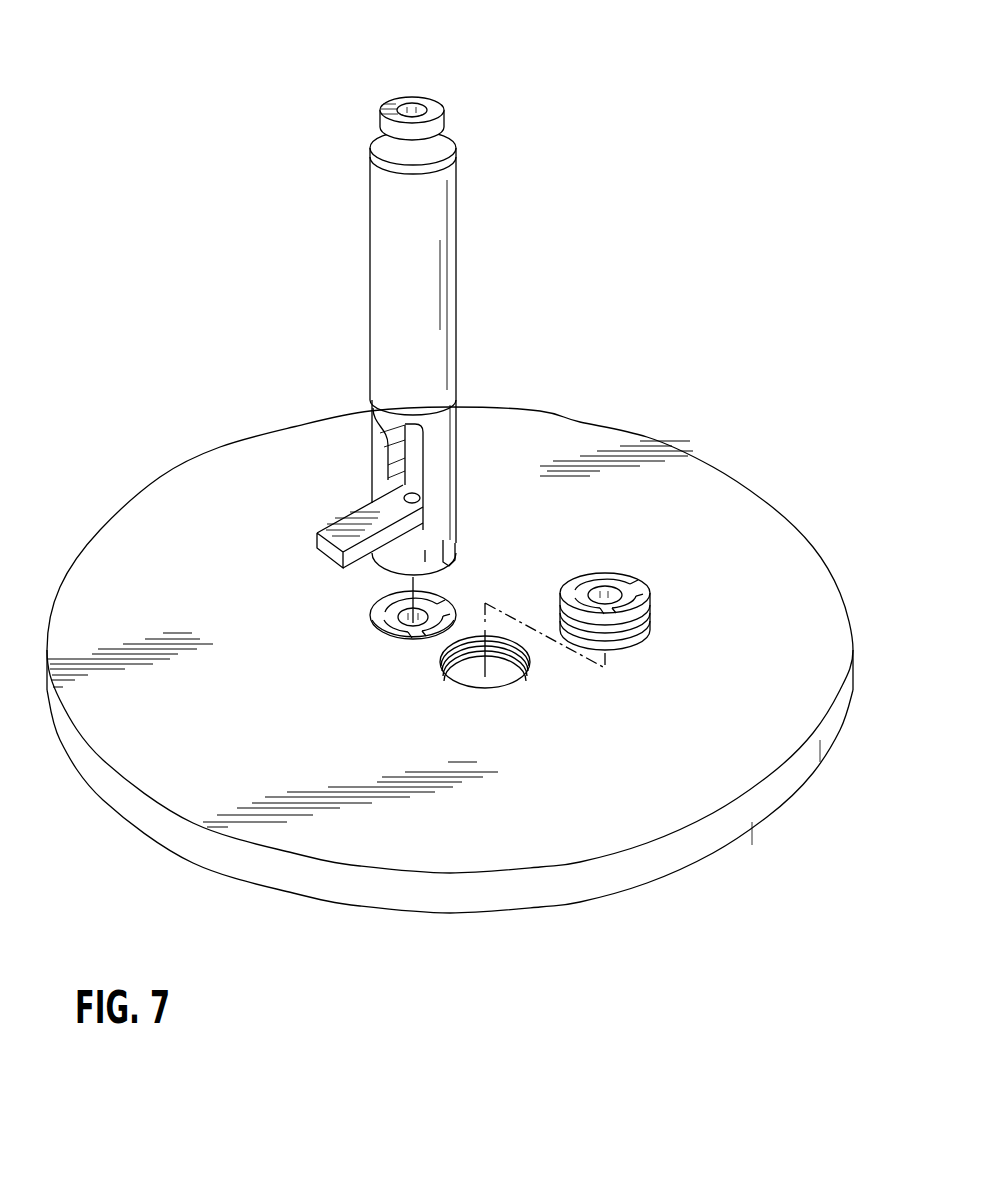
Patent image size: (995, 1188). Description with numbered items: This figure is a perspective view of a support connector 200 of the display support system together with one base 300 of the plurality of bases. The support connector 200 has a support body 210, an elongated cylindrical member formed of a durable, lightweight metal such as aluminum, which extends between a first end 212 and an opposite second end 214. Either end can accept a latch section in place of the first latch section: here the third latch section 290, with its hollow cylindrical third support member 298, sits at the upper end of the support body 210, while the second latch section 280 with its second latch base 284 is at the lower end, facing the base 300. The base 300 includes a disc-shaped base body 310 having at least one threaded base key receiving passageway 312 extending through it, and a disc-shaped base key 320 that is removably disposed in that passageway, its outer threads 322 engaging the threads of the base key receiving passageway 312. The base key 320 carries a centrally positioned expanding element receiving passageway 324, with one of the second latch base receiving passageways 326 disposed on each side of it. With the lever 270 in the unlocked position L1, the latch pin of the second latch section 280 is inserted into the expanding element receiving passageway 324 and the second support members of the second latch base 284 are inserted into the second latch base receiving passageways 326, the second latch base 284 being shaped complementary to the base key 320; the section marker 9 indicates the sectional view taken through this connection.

The support connector 200 is at (397, 311).
The support body 210 is at (457, 275).
The first end 212 is at (458, 392).
The second end 214 is at (450, 162).
The lever 270 is at (348, 513).
The second latch section 280 is at (456, 487).
The second latch base 284 is at (458, 543).
The third latch section 290 is at (404, 94).
The third support member 298 is at (437, 106).
The base 300 is at (450, 624).
The base body 310 is at (730, 497).
The base key receiving passageway 312 is at (510, 653).
The base key 320 is at (518, 585).
The outer threads 322 is at (650, 618).
The expanding element receiving passageway 324 is at (608, 587).
The second latch base receiving passageways 326 is at (597, 567).
The unlocked position L1 is at (303, 566).
The section line 9- 9 is at (413, 37).